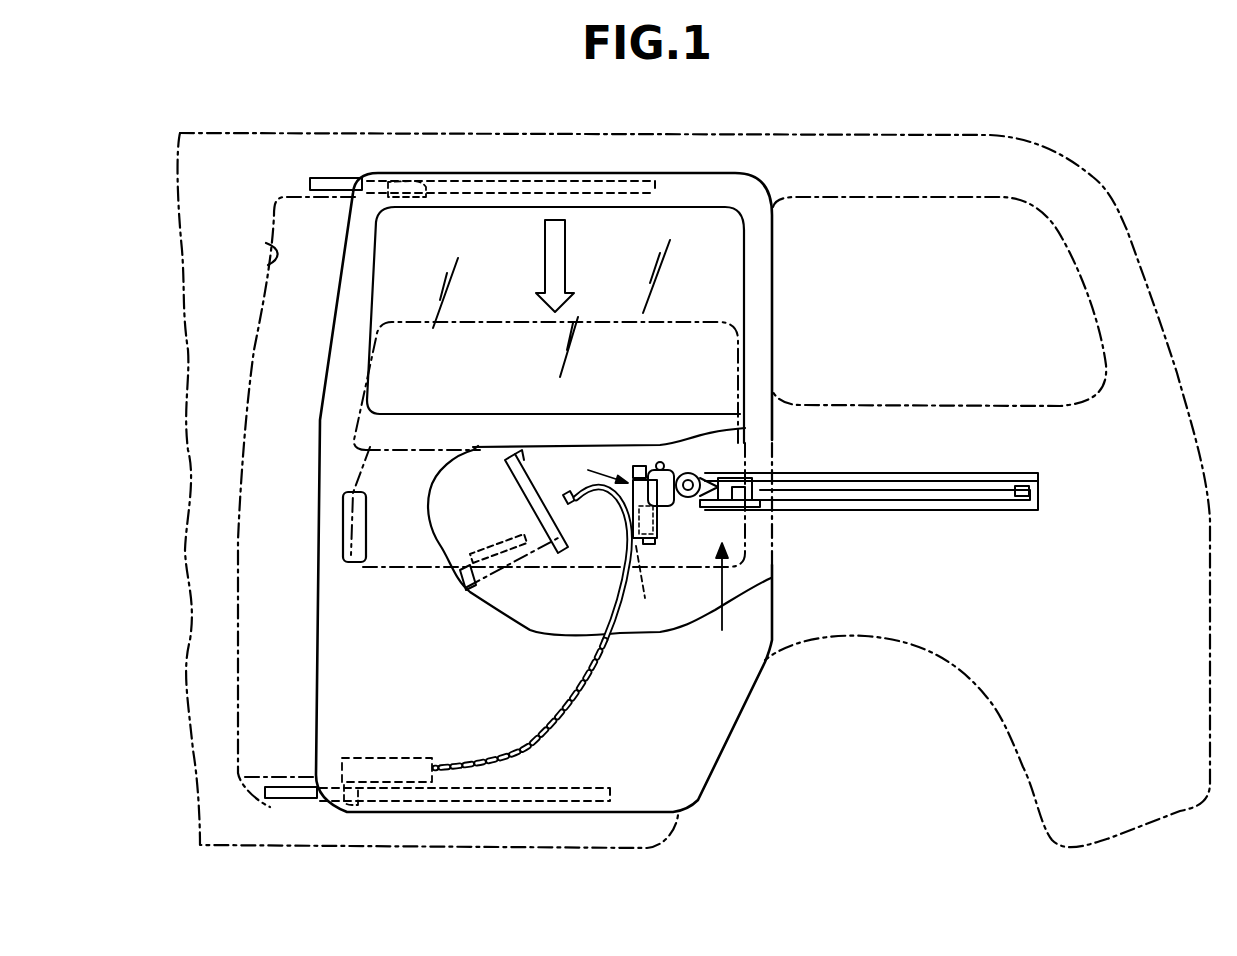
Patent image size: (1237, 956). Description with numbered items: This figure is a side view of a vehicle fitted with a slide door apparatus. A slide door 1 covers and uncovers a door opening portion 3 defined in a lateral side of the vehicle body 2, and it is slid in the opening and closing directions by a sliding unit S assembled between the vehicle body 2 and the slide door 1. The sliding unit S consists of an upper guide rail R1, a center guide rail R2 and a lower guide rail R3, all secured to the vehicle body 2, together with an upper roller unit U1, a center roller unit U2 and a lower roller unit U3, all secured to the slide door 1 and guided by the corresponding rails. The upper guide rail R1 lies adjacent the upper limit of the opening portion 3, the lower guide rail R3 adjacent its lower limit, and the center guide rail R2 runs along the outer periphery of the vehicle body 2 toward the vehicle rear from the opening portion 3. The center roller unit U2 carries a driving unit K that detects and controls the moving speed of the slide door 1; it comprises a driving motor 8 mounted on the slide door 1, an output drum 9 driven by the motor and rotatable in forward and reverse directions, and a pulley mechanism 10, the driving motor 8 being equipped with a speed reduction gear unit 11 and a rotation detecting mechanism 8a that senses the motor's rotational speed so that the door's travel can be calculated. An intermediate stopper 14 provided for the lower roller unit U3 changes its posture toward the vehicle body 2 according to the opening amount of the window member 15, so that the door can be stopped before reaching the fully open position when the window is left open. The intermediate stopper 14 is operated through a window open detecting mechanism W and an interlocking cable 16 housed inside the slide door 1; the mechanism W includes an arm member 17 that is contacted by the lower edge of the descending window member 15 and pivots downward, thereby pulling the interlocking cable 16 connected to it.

The slide door 1 is at (326, 472).
The vehicle body 2 is at (1085, 183).
The door opening portion 3 is at (266, 262).
The driving motor 8 is at (657, 517).
The rotation detecting mechanism 8a is at (640, 588).
The output drum 9 is at (690, 498).
The pulley mechanism 10 is at (758, 475).
The speed reduction gear unit 11 is at (665, 468).
The intermediate stopper 14 is at (382, 758).
The window member 15 is at (717, 274).
The interlocking cable 16 is at (606, 600).
The arm member 17 is at (510, 492).
The driving unit K is at (596, 470).
The sliding unit S is at (721, 603).
The window open detecting mechanism W is at (447, 523).
The upper guide rail R1 is at (334, 188).
The center guide rail R2 is at (925, 512).
The lower guide rail R3 is at (300, 793).
The upper roller unit U1 is at (411, 199).
The center roller unit U2 is at (758, 510).
The lower roller unit U3 is at (352, 808).